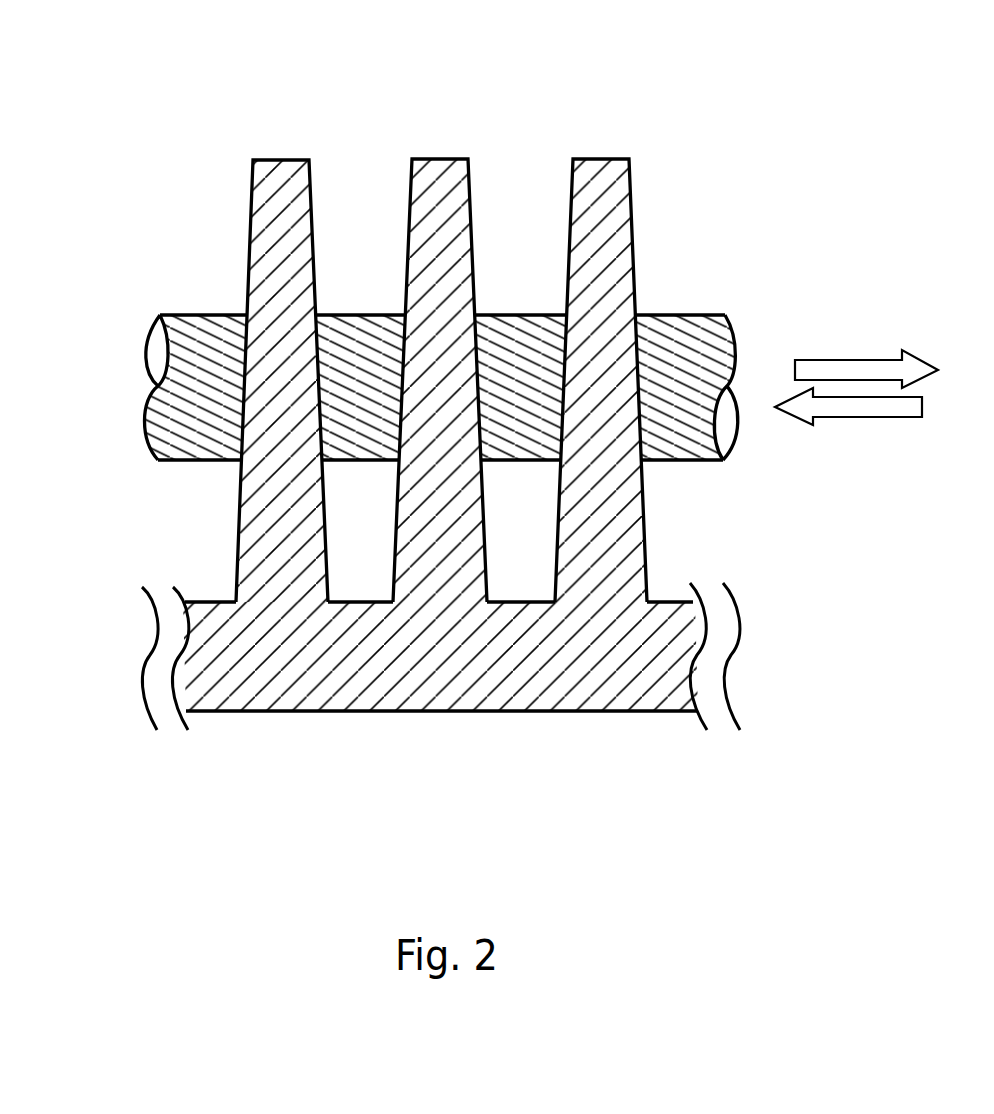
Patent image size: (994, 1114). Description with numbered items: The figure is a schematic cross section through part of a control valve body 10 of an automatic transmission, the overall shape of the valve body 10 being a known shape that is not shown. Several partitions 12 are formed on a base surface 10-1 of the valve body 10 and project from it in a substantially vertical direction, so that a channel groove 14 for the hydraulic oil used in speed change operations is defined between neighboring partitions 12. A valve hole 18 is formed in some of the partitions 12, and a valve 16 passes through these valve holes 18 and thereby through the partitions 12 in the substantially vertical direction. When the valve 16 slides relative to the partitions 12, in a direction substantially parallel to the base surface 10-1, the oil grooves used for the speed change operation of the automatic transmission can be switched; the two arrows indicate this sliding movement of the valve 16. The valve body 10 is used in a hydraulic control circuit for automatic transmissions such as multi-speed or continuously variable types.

The valve body 10 is at (271, 712).
The base surface 10-1 is at (535, 598).
The partition 12 is at (273, 175).
The channel groove 14 is at (360, 202).
The valve 16 is at (722, 336).
The valve hole 18 is at (215, 352).